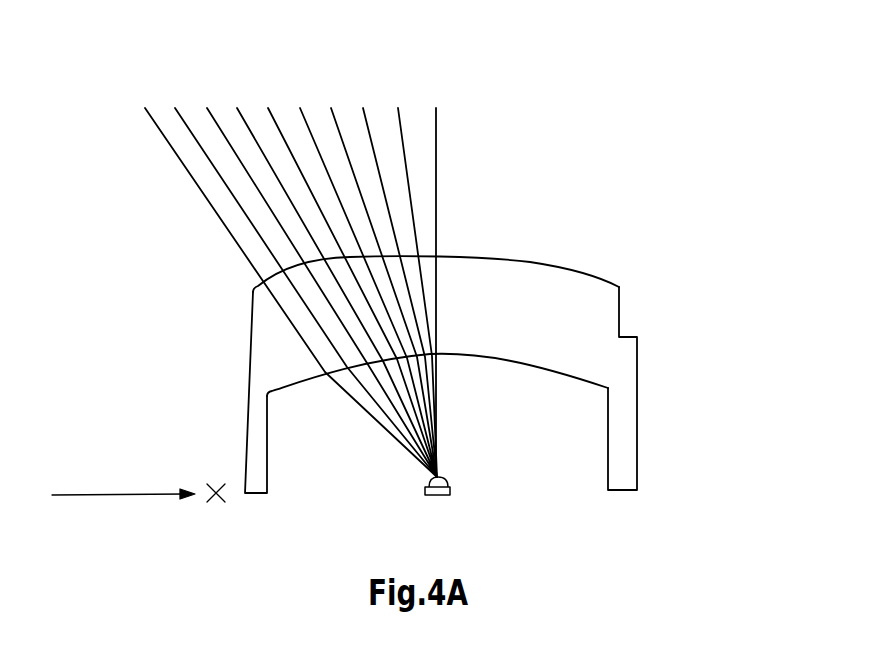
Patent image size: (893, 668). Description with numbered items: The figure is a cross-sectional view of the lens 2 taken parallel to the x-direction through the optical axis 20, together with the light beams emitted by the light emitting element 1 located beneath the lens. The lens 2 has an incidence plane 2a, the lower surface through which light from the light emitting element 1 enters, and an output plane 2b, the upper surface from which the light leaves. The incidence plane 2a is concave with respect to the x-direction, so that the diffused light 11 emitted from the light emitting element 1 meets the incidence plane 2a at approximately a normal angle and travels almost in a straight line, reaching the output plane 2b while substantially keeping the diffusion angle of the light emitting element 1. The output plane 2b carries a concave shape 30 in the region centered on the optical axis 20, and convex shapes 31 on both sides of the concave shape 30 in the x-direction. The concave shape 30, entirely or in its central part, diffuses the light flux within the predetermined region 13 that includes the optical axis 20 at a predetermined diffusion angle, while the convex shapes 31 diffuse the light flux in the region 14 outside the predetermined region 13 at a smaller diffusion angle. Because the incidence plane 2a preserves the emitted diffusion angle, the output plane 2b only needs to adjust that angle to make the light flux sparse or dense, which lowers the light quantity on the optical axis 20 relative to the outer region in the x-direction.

The light emitting element 1 is at (451, 489).
The lens 2 is at (492, 371).
The incidence plane 2a is at (552, 374).
The output plane 2b is at (613, 282).
The light 11 is at (374, 421).
The predetermined region 13 is at (437, 249).
The region 14 is at (284, 259).
The optical axis 20 is at (468, 289).
The concave shape 30 is at (392, 245).
The convex shape 31 is at (390, 253).